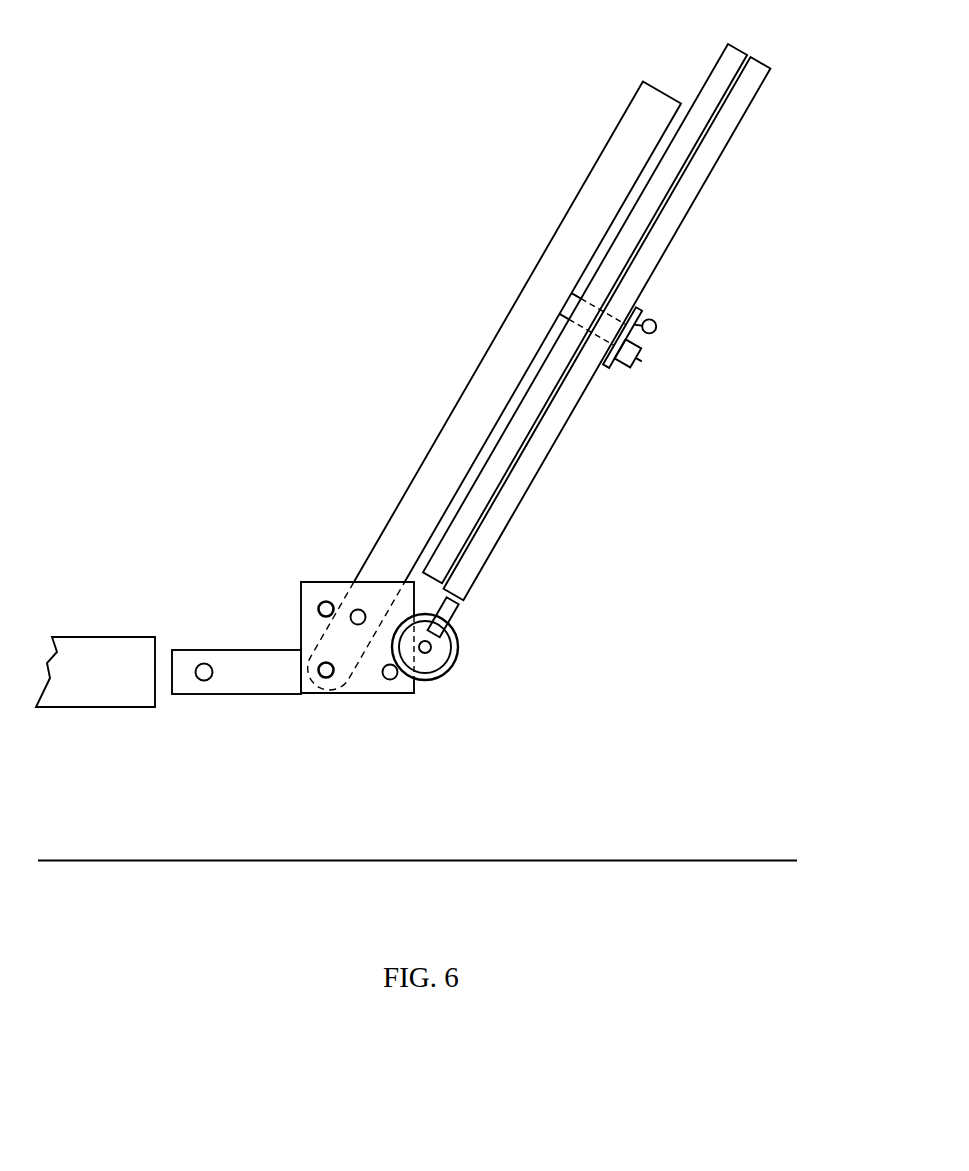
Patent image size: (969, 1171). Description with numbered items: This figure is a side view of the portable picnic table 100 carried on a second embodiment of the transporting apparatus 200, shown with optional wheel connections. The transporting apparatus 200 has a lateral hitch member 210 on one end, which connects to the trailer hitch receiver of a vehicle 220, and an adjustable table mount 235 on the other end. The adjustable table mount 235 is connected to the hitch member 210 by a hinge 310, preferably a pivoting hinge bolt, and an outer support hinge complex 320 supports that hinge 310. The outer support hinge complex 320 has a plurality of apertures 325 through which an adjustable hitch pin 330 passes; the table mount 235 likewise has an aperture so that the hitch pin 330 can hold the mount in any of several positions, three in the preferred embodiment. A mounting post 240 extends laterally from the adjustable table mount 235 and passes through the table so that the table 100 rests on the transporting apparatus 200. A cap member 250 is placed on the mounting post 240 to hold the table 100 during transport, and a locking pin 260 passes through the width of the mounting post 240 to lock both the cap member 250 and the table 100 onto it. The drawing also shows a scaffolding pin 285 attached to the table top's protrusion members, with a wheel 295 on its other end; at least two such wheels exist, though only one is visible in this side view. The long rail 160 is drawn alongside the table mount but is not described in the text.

The table 100 is at (778, 139).
The rail 160 is at (690, 198).
The transporting apparatus 200 is at (551, 105).
The adjustable table mount 235 is at (528, 320).
The cap member 250 is at (643, 312).
The locking pin 260 is at (657, 326).
The mounting post 240 is at (637, 347).
The scaffolding pins 285 is at (453, 603).
The wheel 295 is at (448, 648).
The outer support hinge complex 320 is at (407, 687).
The apertures 325 is at (322, 608).
The adjustable hitch pin 330 is at (358, 624).
The hinge 310 is at (326, 677).
The lateral hitch member 210 is at (228, 678).
The vehicle 220 is at (94, 690).